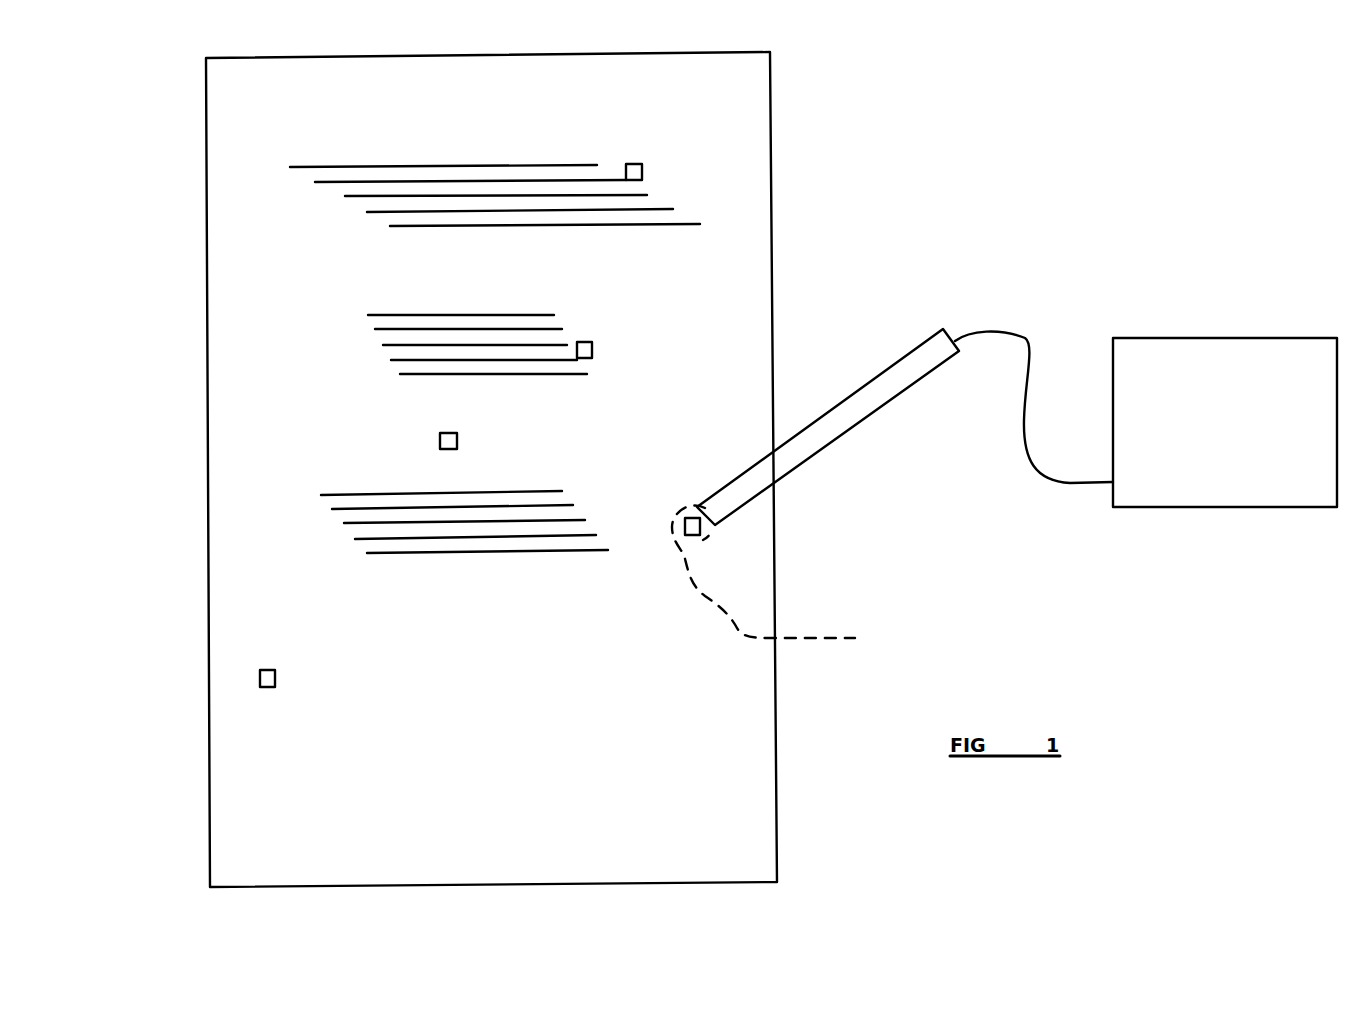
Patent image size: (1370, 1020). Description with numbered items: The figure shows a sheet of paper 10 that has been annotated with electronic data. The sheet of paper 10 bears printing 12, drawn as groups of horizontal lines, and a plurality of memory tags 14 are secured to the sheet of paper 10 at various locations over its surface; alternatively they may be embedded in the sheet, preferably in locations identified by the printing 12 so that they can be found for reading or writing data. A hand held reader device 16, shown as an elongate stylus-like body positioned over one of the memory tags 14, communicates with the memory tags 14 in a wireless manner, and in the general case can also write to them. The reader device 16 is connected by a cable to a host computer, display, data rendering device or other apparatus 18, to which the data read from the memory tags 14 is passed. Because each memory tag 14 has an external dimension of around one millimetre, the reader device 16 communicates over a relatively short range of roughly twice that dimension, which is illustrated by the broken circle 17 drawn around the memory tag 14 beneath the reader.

The sheet of paper 10 is at (228, 342).
The printing 12 is at (365, 197).
The memory tags 14 is at (642, 172).
The hand held reader device 16 is at (858, 423).
The broken circle 17 is at (777, 577).
The host computer 18 is at (1215, 507).